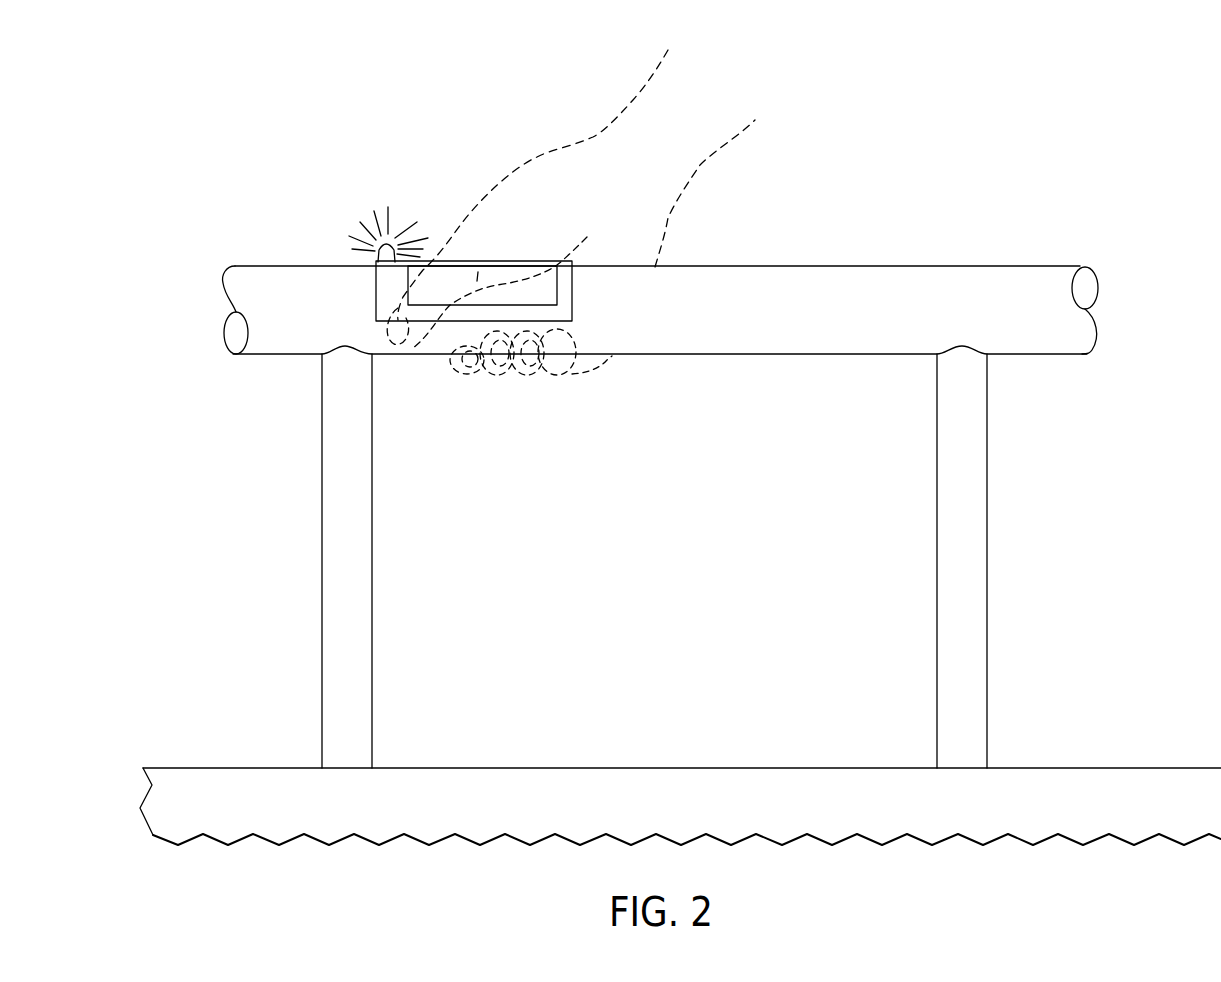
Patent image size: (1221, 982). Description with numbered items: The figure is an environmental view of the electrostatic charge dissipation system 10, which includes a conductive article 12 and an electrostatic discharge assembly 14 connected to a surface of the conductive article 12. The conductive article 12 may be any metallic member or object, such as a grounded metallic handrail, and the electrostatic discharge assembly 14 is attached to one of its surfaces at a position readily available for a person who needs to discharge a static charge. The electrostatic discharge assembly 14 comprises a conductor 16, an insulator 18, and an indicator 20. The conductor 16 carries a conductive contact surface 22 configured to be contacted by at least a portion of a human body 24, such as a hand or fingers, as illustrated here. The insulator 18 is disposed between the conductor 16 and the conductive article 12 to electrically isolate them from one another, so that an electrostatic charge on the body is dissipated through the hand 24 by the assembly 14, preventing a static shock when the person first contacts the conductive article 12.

The electrostatic charge dissipation system 10 is at (1086, 177).
The conductive article 12 is at (918, 266).
The electrostatic discharge assembly 14 is at (343, 225).
The conductor 16 is at (408, 272).
The insulator 18 is at (376, 316).
The indicator 20 is at (390, 241).
The conductive contact surface 22 is at (527, 289).
The human body 24 is at (720, 158).